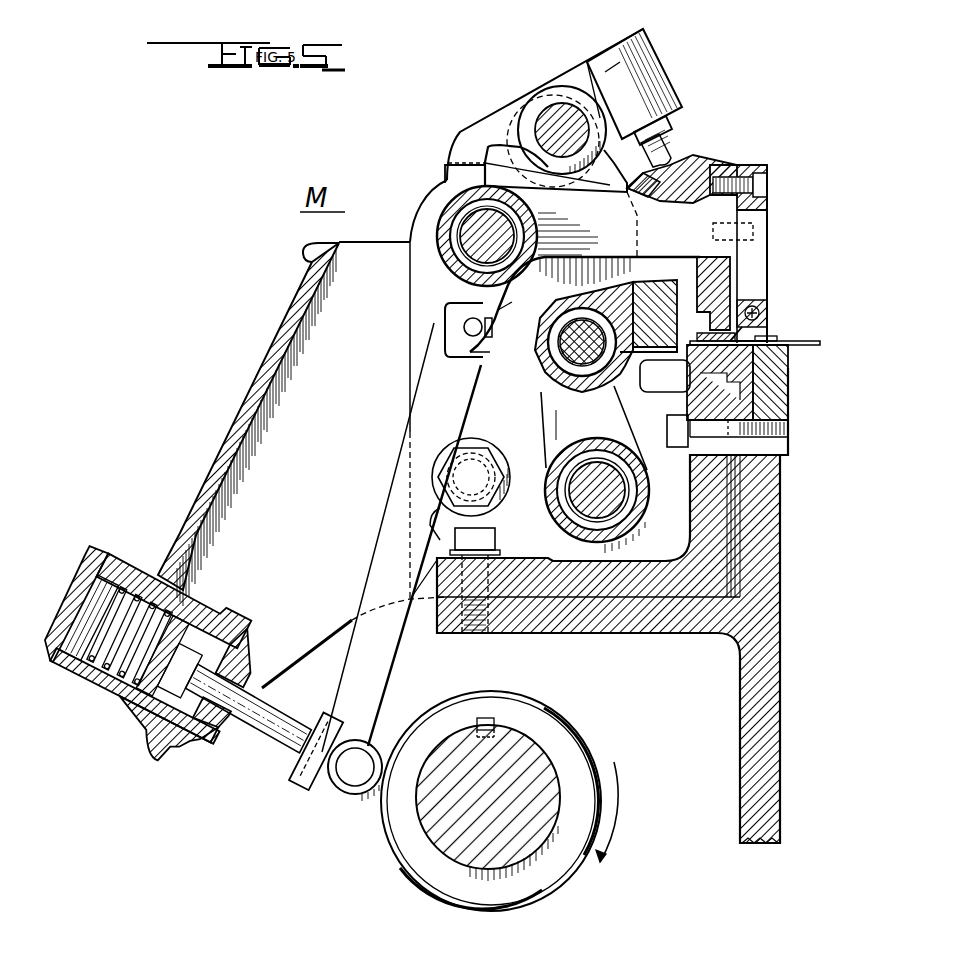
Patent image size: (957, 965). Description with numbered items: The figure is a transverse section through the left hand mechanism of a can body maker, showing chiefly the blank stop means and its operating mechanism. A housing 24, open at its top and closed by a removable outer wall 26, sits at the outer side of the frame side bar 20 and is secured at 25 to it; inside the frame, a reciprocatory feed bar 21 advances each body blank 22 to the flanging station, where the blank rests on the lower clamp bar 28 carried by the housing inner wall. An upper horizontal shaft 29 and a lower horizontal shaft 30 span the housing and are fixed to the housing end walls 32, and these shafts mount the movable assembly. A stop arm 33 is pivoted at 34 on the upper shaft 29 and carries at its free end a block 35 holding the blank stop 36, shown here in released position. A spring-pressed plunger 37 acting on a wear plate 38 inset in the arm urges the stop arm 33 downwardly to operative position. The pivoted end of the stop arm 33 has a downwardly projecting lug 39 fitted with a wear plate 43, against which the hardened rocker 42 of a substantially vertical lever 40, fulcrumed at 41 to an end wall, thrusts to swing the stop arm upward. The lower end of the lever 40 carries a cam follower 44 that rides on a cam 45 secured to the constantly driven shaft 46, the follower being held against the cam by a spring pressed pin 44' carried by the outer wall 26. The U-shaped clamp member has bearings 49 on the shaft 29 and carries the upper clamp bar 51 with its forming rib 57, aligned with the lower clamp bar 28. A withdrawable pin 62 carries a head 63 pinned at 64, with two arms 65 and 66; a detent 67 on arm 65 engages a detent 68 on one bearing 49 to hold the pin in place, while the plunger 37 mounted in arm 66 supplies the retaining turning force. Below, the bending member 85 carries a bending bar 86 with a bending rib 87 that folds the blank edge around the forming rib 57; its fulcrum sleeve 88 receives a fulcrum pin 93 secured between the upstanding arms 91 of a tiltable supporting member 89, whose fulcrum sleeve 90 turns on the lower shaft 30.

The frame side bar 20 is at (760, 546).
The feed bar 21 is at (787, 375).
The body blank 22 is at (802, 334).
The housing 24 is at (420, 212).
The securing means 25 is at (488, 544).
The removable outer wall 26 is at (242, 426).
The lower clamp bar 28 is at (797, 354).
The upper horizontal shaft 29 is at (460, 254).
The lower horizontal shaft 30 is at (580, 495).
The housing end wall 32 is at (410, 364).
The stop arm 33 is at (672, 210).
The pivot 34 is at (462, 283).
The block 35 is at (770, 160).
The blank stop 36 is at (755, 326).
The spring-pressed plunger 37 is at (681, 150).
The wear plate 38 is at (652, 178).
The lug 39 is at (505, 325).
The lever 40 is at (397, 497).
The fulcrum 41 is at (467, 455).
The hardened rocker 42 is at (466, 330).
The wear plate 43 is at (492, 354).
The cam follower 44 is at (335, 774).
The spring pressed pin 44' is at (180, 678).
The cam 45 is at (397, 860).
The constantly driven shaft 46 is at (463, 857).
The bearing 49 is at (536, 199).
The upper clamp bar 51 is at (723, 298).
The forming rib 57 is at (700, 333).
The pin 62 is at (536, 125).
The head 63 is at (563, 95).
The pinning 64 is at (530, 86).
The arm 65 is at (470, 133).
The arm 66 is at (603, 72).
The detent 67 is at (450, 167).
The detent 68 is at (447, 164).
The bending member 85 is at (588, 300).
The bending bar 86 is at (668, 278).
The bending rib 87 is at (676, 362).
The fulcrum sleeve 88 is at (548, 370).
The tiltable supporting member 89 is at (655, 412).
The fulcrum sleeve 90 is at (640, 508).
The upstanding arm 91 is at (548, 418).
The fulcrum pin 93 is at (597, 463).